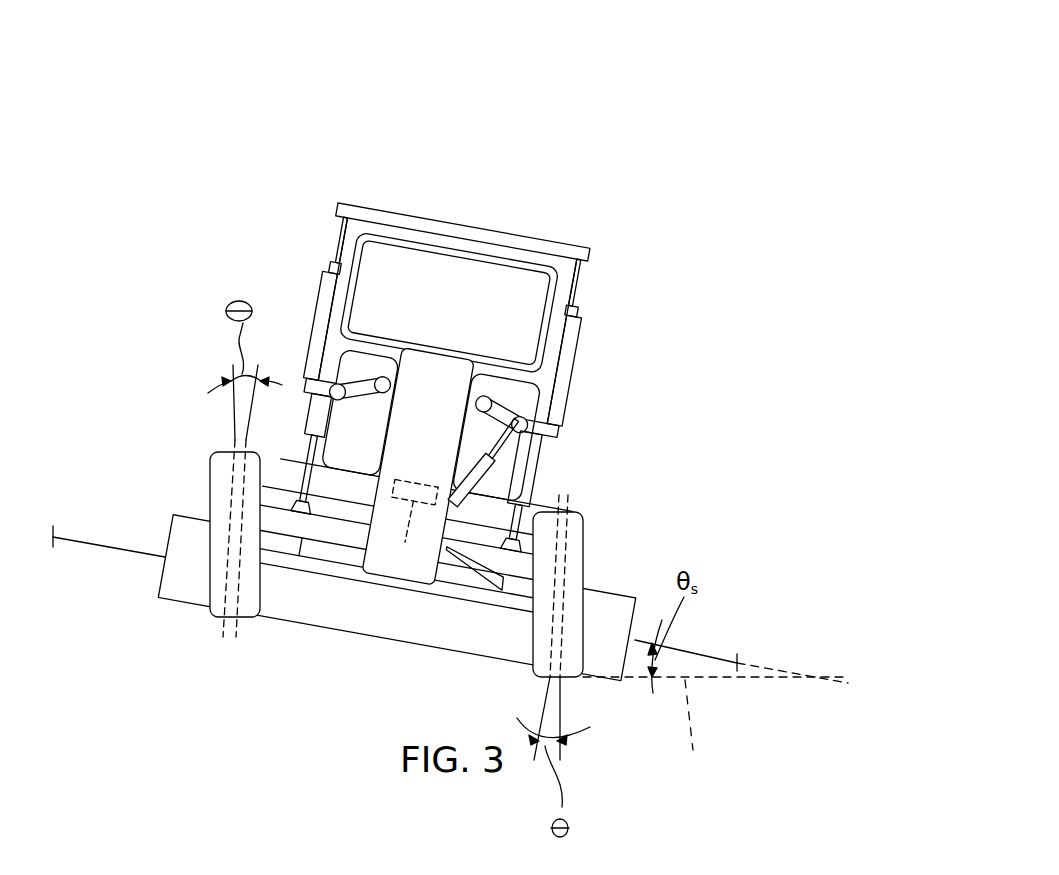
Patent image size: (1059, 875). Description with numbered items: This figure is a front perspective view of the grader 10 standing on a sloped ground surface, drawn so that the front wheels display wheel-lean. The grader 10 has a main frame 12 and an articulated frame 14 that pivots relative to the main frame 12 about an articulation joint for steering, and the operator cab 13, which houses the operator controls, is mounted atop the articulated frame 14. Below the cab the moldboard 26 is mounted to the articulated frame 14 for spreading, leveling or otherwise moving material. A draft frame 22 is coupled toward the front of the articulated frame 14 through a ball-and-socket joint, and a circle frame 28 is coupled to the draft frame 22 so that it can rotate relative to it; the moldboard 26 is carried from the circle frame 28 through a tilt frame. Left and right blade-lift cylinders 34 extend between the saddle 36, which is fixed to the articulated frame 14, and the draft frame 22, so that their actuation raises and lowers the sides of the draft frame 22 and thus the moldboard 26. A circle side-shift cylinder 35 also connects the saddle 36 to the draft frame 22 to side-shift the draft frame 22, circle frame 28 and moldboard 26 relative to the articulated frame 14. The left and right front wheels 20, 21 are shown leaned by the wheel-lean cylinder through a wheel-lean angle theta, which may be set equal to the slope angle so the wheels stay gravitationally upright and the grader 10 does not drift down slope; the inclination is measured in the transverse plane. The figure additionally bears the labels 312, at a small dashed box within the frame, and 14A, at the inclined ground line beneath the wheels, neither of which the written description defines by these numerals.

The grader 10 is at (746, 110).
The operator cab 13 is at (500, 208).
The blade-lift cylinders 34 is at (333, 284).
The saddle 36 is at (498, 412).
The circle side-shift cylinder 35 is at (505, 490).
The sensor housing 312 is at (418, 466).
The draft frame 22 is at (290, 483).
The circle frame 28 is at (322, 532).
The moldboard 26 is at (413, 628).
The right front wheel 21 is at (218, 472).
The left front wheel 20 is at (578, 548).
The main frame 12 is at (240, 648).
The articulated frame 14 is at (715, 732).
The sloped ground surface 14A is at (690, 648).